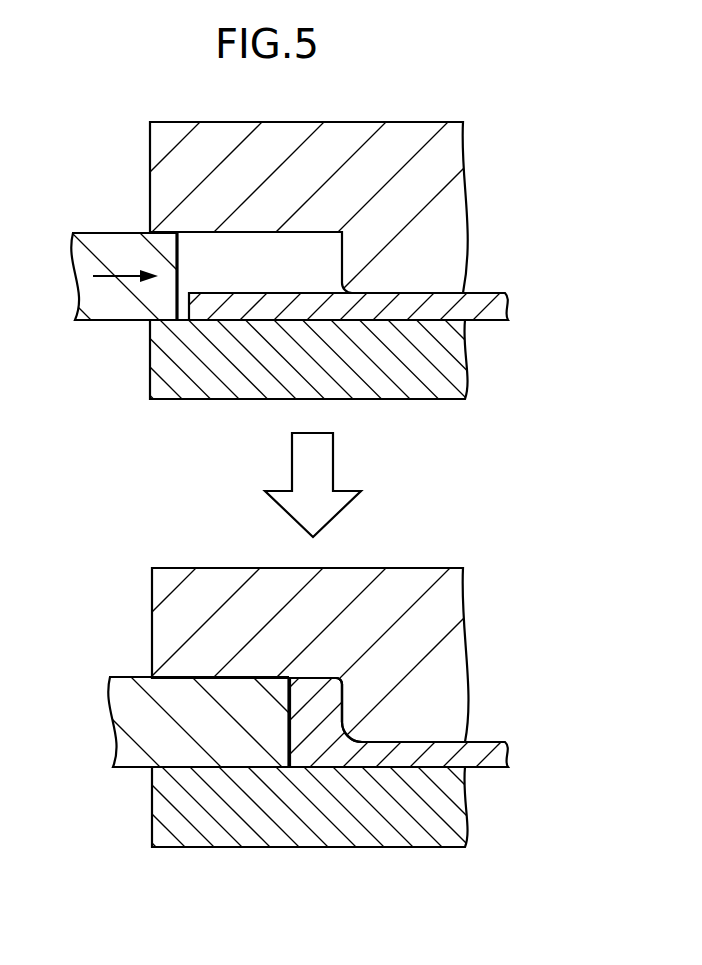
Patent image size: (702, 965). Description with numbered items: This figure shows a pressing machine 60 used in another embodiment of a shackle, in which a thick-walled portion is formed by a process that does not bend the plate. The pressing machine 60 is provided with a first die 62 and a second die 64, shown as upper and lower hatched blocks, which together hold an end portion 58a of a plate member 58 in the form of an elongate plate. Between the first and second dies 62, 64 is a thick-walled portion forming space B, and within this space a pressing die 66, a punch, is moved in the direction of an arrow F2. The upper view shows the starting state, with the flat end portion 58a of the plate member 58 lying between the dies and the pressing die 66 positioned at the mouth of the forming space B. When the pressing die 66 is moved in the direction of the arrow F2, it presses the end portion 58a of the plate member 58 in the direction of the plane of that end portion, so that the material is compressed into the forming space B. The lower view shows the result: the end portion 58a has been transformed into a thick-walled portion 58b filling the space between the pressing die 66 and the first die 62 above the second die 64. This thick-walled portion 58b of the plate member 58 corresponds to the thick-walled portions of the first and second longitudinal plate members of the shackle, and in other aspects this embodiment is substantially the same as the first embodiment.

The plate member 58 is at (387, 513).
The end portion 58a is at (276, 300).
The thick-walled portion 58b is at (317, 705).
The pressing machine 60 is at (278, 480).
The first die 62 is at (337, 152).
The second die 64 is at (380, 380).
The pressing die 66 is at (173, 479).
The thick-walled portion forming space B is at (253, 252).
The arrow F2 is at (125, 290).